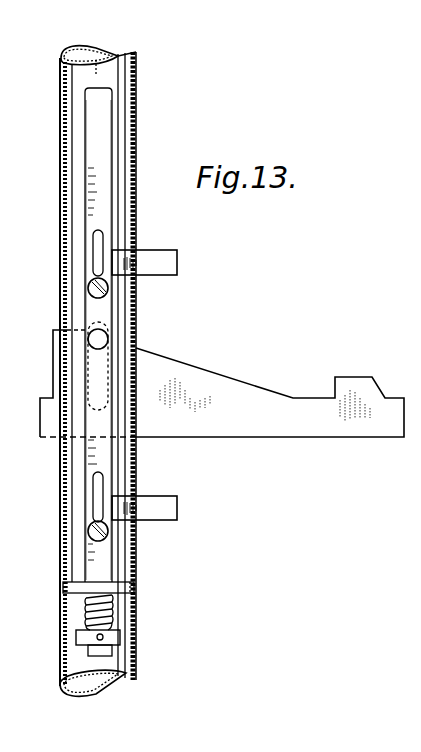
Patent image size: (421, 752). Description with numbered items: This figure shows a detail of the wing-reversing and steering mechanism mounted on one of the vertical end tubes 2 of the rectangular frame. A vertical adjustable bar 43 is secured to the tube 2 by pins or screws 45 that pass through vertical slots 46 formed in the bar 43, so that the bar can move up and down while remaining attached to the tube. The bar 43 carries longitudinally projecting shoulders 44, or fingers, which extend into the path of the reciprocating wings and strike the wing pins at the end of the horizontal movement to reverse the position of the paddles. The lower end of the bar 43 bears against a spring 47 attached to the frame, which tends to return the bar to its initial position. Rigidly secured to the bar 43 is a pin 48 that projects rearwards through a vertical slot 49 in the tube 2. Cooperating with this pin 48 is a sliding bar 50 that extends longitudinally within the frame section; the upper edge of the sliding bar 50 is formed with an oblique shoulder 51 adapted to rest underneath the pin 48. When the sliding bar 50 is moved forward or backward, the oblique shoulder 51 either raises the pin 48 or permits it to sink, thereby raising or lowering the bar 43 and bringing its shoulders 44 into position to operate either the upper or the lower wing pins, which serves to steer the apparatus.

The vertical tube 2 is at (80, 168).
The vertical adjustable bar 43 is at (100, 193).
The longitudinally projecting shoulder 44 is at (150, 257).
The pin or screw 45 is at (96, 286).
The vertical slot 46 is at (97, 254).
The spring 47 is at (113, 607).
The pin 48 is at (104, 338).
The vertical slot 49 is at (100, 378).
The sliding bar 50 is at (232, 368).
The oblique shoulder 51 is at (208, 381).